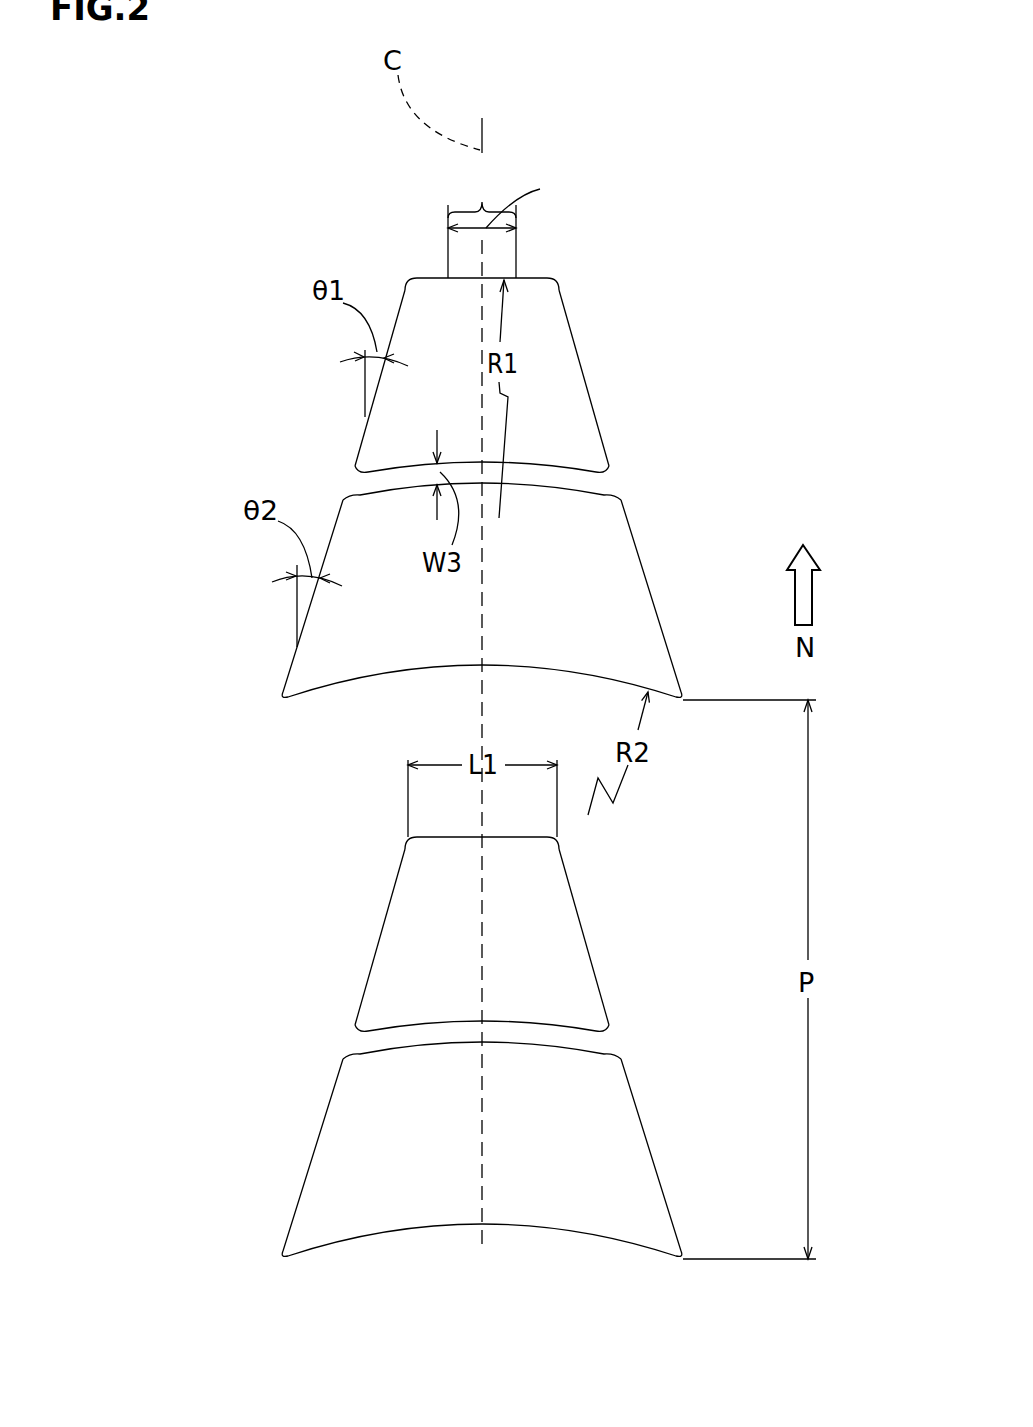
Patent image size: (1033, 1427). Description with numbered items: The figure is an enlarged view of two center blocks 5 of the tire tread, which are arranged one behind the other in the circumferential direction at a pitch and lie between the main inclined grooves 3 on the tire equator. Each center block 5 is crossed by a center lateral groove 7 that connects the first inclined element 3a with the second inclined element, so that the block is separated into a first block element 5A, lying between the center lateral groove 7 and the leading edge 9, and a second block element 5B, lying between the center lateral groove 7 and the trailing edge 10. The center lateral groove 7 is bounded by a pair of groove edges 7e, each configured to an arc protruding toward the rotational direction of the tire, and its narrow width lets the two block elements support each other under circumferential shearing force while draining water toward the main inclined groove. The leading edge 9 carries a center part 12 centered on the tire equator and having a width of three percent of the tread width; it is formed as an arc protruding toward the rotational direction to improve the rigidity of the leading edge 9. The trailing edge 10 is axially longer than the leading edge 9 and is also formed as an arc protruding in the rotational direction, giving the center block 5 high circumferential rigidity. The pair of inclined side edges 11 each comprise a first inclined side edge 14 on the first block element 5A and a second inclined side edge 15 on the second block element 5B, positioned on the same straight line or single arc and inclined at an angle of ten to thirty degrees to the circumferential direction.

The main inclined groove 3 is at (284, 649).
The first inclined element 3a is at (562, 266).
The center block 5 is at (648, 250).
The first block element 5A is at (465, 931).
The second block element 5B is at (471, 1115).
The center lateral groove 7 is at (536, 712).
The groove edge 7e is at (600, 470).
The leading edge 9 is at (430, 275).
The trailing edge 10 is at (347, 685).
The inclined side edge 11 is at (357, 437).
The center part 12 is at (551, 220).
The first inclined side edge 14 is at (386, 917).
The second inclined side edge 15 is at (645, 1125).